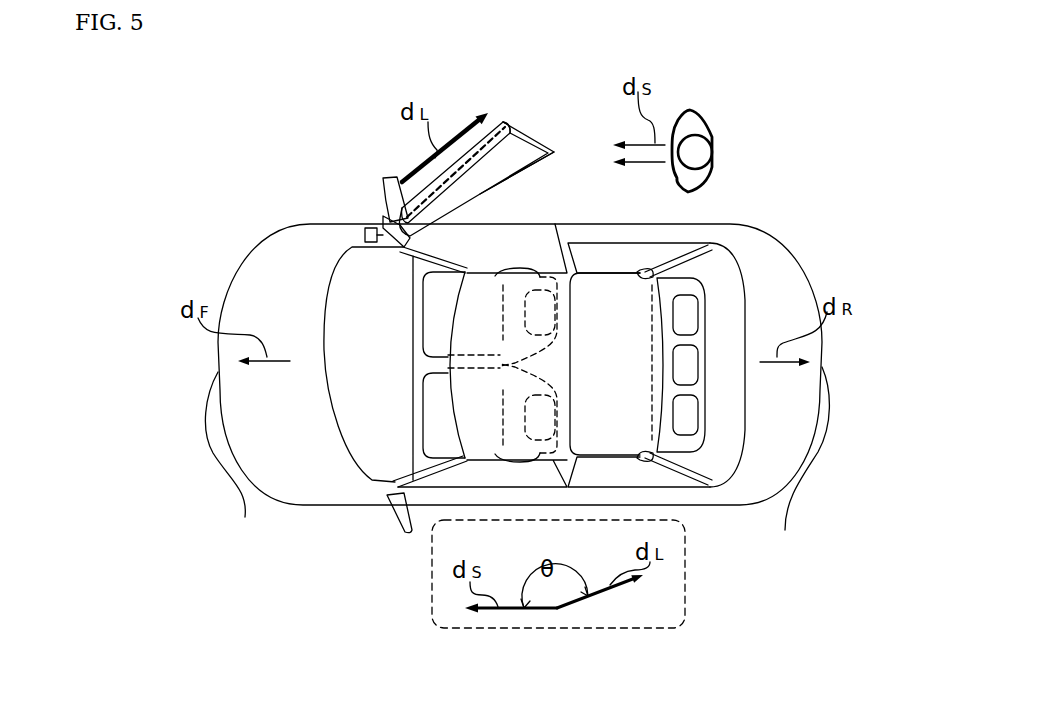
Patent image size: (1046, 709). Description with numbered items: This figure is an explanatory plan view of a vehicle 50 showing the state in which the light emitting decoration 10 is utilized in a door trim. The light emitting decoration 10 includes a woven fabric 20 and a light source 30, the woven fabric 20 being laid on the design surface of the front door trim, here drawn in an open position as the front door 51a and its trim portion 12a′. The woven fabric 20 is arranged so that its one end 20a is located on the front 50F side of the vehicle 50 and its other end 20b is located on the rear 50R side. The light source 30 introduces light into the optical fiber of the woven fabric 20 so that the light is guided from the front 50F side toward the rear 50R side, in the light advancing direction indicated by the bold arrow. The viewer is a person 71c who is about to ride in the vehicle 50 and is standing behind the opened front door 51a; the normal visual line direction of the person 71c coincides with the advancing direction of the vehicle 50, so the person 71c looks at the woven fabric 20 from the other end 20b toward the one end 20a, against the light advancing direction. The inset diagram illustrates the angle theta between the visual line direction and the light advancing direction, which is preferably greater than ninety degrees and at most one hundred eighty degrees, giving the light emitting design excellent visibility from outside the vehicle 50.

The light emitting decoration 10 is at (277, 95).
The woven fabric 20 is at (465, 182).
The one end of the woven fabric 20a is at (400, 245).
The other end of the woven fabric 20b is at (505, 122).
The light source 30 is at (363, 224).
The guide frame of pillar anchor 12a′ is at (503, 123).
The front door 51a is at (475, 206).
The vehicle 50 is at (305, 230).
The front side of the vehicle 50F is at (242, 458).
The rear side of the vehicle 50R is at (796, 462).
The person 71c is at (743, 93).